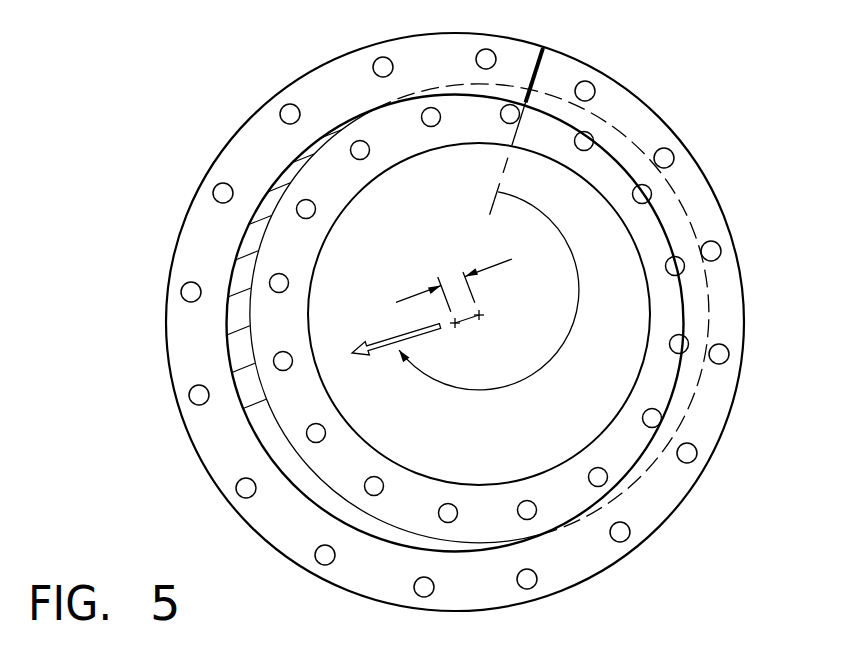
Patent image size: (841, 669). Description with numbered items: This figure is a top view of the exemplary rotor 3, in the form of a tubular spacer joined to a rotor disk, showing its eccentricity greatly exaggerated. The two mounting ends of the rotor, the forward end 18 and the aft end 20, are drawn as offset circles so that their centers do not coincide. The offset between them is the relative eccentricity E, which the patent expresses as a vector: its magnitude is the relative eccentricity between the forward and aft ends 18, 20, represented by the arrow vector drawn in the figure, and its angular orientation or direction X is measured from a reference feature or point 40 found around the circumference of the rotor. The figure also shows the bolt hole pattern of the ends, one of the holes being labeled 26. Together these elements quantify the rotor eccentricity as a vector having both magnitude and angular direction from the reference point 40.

The third rotor 3 is at (736, 433).
The rotor forward end 18 is at (295, 250).
The rotor aft end 20 is at (247, 153).
The bolt hole 26 is at (199, 394).
The reference point 40 is at (539, 62).
The relative eccentricity E is at (506, 266).
The angular direction X is at (571, 336).